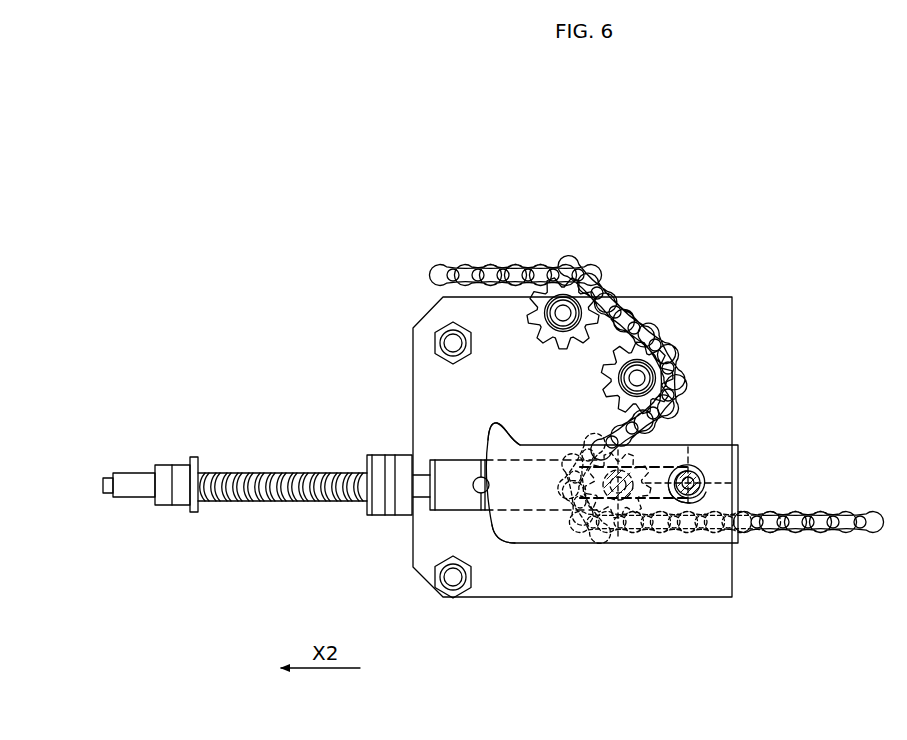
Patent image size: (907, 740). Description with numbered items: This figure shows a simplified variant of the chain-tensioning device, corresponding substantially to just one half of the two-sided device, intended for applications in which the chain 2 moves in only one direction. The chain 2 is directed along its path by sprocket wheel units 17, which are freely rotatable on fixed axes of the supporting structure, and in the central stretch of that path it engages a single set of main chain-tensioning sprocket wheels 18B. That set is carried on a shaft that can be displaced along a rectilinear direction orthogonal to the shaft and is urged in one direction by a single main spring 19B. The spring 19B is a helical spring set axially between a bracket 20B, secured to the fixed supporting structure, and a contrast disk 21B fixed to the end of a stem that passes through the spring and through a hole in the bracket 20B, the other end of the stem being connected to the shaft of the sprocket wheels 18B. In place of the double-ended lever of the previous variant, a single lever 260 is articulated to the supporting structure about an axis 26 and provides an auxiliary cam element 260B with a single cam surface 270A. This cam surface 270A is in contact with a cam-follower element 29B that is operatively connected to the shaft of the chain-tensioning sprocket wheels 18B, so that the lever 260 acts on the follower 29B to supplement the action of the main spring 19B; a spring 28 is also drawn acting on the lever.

The chain 2 is at (486, 236).
The sprocket wheel units 17 is at (528, 321).
The main chain-tensioning sprocket wheel set 18B is at (620, 523).
The main spring 19B is at (262, 500).
The bracket 20B is at (375, 503).
The contrast disk 21B is at (196, 512).
The axis 26 is at (677, 463).
The coil portion of biasing member 28 is at (715, 500).
The cam-follower element 29B is at (473, 494).
The lever 260 is at (543, 550).
The auxiliary cam element 260B is at (508, 455).
The cam surface 270A is at (498, 525).